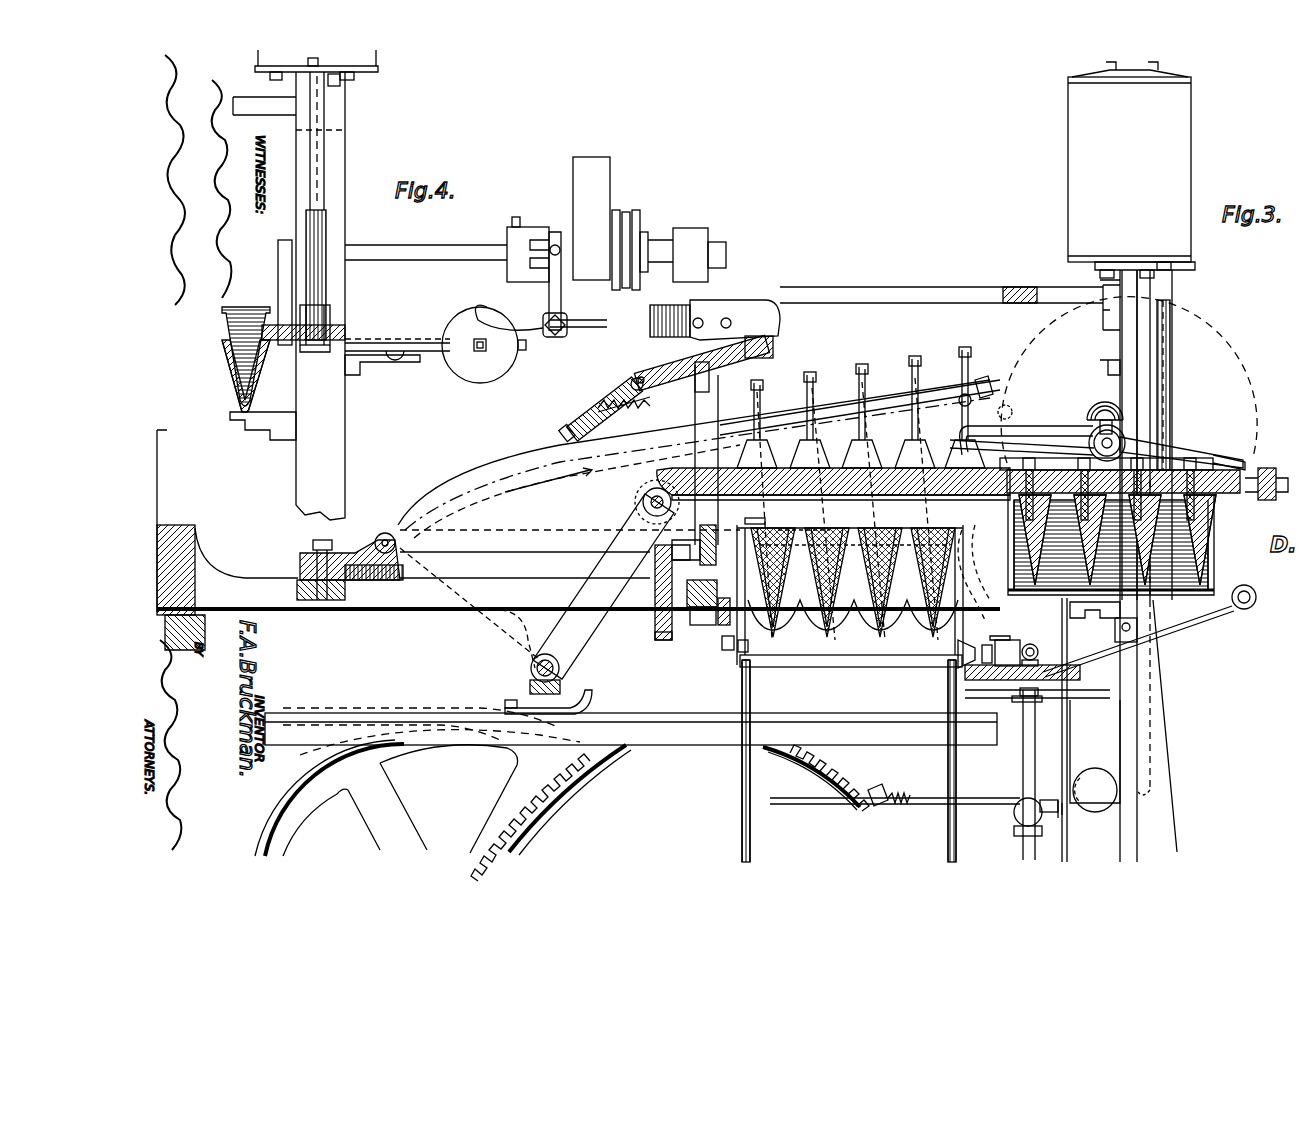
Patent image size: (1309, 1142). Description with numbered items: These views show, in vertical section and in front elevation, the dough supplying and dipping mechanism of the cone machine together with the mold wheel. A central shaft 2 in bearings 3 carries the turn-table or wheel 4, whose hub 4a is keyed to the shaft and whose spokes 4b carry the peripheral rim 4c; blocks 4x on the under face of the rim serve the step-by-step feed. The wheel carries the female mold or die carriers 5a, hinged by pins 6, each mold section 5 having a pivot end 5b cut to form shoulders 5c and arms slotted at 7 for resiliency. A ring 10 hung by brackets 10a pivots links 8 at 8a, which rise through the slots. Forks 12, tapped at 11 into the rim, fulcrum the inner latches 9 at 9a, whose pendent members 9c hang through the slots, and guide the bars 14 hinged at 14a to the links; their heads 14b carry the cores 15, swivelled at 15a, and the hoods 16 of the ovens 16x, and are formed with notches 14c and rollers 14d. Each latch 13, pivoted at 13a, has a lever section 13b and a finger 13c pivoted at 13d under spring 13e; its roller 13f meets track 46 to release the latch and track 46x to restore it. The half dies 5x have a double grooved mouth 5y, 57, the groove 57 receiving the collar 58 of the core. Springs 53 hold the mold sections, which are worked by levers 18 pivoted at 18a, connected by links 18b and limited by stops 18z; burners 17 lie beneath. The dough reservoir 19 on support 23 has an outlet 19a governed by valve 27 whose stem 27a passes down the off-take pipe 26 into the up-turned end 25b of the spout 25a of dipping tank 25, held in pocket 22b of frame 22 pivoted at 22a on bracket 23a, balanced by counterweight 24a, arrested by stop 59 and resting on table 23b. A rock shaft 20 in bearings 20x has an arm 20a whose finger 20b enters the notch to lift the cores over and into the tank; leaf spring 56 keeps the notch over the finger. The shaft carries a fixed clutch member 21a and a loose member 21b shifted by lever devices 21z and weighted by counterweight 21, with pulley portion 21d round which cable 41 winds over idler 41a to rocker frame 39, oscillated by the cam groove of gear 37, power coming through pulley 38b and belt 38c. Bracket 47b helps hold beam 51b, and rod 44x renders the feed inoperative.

In FIG. 3, the central shaft 2 is at (156, 510).
In FIG. 3, the bearings 3 is at (206, 600).
In FIG. 3, the turn-table or wheel 4 is at (246, 553).
In FIG. 3, the hub 4a is at (195, 527).
In FIG. 3, the spokes 4b is at (687, 594).
In FIG. 3, the peripheral rim 4c is at (722, 625).
In FIG. 3, the blocks 4x is at (714, 648).
In FIG. 3, the mold sections 5 is at (551, 553).
In FIG. 3, the female mold or die carriers 5a is at (570, 539).
In FIG. 3, the pivot end 5b is at (301, 566).
In FIG. 3, the shoulders or sockets 5c is at (352, 580).
In FIG. 3, the half dies 5x is at (828, 630).
In FIG. 3, the groove of double grooved mouth 5y is at (836, 509).
In FIG. 3, the pins 6 is at (322, 558).
In FIG. 3, the slot 7 is at (515, 556).
In FIG. 3, the links 8 is at (498, 595).
In FIG. 3, the link pivot 8a is at (537, 660).
In FIG. 3, the inner latches 9 is at (655, 545).
In FIG. 3, the latch fulcrum 9a is at (700, 533).
In FIG. 3, the pendent members 9c is at (660, 640).
In FIG. 3, the ring 10 is at (530, 690).
In FIG. 3, the brackets 10a is at (546, 652).
In FIG. 3, the tapped ends of forks 11 is at (700, 625).
In FIG. 3, the forks 12 is at (718, 455).
In FIG. 3, the latches 13 is at (634, 385).
In FIG. 3, the latch pivot 13a is at (702, 362).
In FIG. 3, the lever section 13b is at (683, 372).
In FIG. 3, the finger 13c is at (590, 414).
In FIG. 3, the finger pivot 13d is at (640, 377).
In FIG. 3, the spring 13e is at (634, 414).
In FIG. 3, the roller 13f is at (776, 355).
In FIG. 3, the bars 14 is at (1288, 486).
In FIG. 3, the bar hinge 14a is at (383, 534).
In FIG. 3, the heads 14b is at (840, 425).
In FIG. 3, the notches 14c is at (987, 366).
In FIG. 3, the roller 14d is at (990, 378).
In FIG. 3, the male dies or cores 15 is at (1222, 560).
In FIG. 3, the ball-like joint 15a is at (940, 400).
In FIG. 3, the oven caps or hoods 16 is at (860, 418).
In FIG. 3, the oven 16x is at (800, 658).
In FIG. 3, the burners 17 is at (850, 656).
In FIG. 3, the lever 18 is at (1000, 652).
In FIG. 3, the lever pivot 18a is at (982, 655).
In FIG. 3, the links 18b is at (995, 660).
In FIG. 3, the stops 18z is at (1036, 700).
In FIG. 4, the dough reservoir 19 is at (377, 67).
In FIG. 3, the dough reservoir 19 is at (1129, 162).
In FIG. 4, the outlet 19a is at (340, 82).
In FIG. 3, the outlet 19a is at (1176, 274).
In FIG. 4, the rock shaft 20 is at (436, 240).
In FIG. 3, the rock shaft 20 is at (1121, 450).
In FIG. 4, the arm 20a is at (288, 262).
In FIG. 3, the arm 20a is at (1248, 457).
In FIG. 3, the finger 20b is at (1252, 500).
In FIG. 3, the bearings 20x is at (1100, 426).
In FIG. 4, the counterweight 21 is at (591, 218).
In FIG. 3, the counterweight 21 is at (1093, 407).
In FIG. 4, the fixed clutch member 21a is at (506, 236).
In FIG. 4, the loose clutch member 21b is at (556, 240).
In FIG. 4, the pulley portion 21d is at (634, 212).
In FIG. 3, the pulley portion 21d is at (1097, 406).
In FIG. 4, the lever devices 21z is at (543, 325).
In FIG. 4, the frame 22 is at (277, 372).
In FIG. 4, the frame pivot 22a is at (403, 341).
In FIG. 4, the pocket 22b is at (222, 355).
In FIG. 3, the pocket 22b is at (1082, 612).
In FIG. 4, the support 23 is at (346, 188).
In FIG. 3, the support 23 is at (1120, 346).
In FIG. 4, the bracket 23a is at (372, 372).
In FIG. 4, the table 23b is at (250, 440).
In FIG. 3, the table 23b is at (1138, 620).
In FIG. 4, the adjustable counterweight 24a is at (484, 345).
In FIG. 4, the dipping tank 25 is at (226, 318).
In FIG. 3, the dipping tank 25 is at (1214, 549).
In FIG. 4, the spout 25a is at (300, 352).
In FIG. 4, the up-turned end 25b is at (330, 310).
In FIG. 4, the off-take pipe 26 is at (326, 160).
In FIG. 3, the off-take pipe 26 is at (1141, 382).
In FIG. 4, the valve 27 is at (308, 64).
In FIG. 3, the valve 27 is at (1165, 266).
In FIG. 4, the valve stem 27a is at (320, 232).
In FIG. 3, the valve stem 27a is at (1171, 354).
In FIG. 3, the gear 37 is at (528, 818).
In FIG. 3, the pulley 38b is at (480, 758).
In FIG. 3, the belt 38c is at (334, 712).
In FIG. 3, the rocker frame 39 is at (878, 788).
In FIG. 4, the cable 41 is at (620, 292).
In FIG. 3, the cable 41 is at (998, 799).
In FIG. 3, the idler 41a is at (1082, 782).
In FIG. 3, the rod 44x is at (1244, 612).
In FIG. 3, the track 46 is at (970, 642).
In FIG. 4, the track 46x is at (698, 305).
In FIG. 3, the bracket 47b is at (1000, 712).
In FIG. 3, the beam 51b is at (700, 714).
In FIG. 3, the springs 53 is at (812, 530).
In FIG. 3, the leaf spring 56 is at (576, 681).
In FIG. 3, the groove 57 is at (760, 522).
In FIG. 3, the collar 58 is at (880, 455).
In FIG. 4, the stop 59 is at (340, 333).